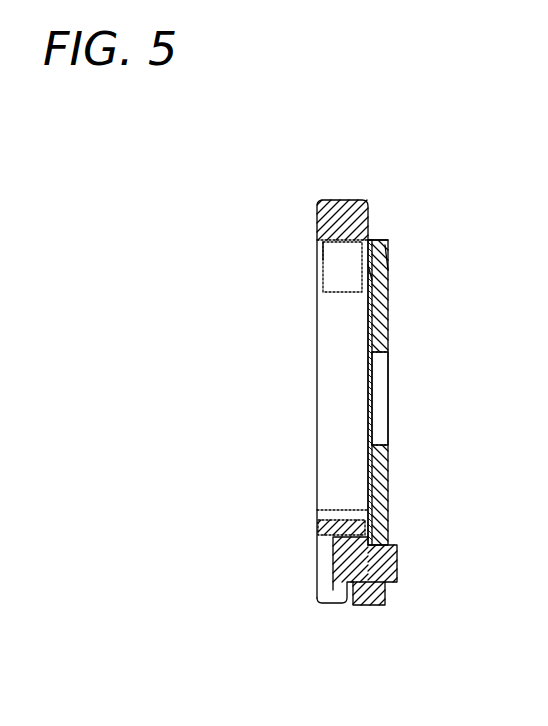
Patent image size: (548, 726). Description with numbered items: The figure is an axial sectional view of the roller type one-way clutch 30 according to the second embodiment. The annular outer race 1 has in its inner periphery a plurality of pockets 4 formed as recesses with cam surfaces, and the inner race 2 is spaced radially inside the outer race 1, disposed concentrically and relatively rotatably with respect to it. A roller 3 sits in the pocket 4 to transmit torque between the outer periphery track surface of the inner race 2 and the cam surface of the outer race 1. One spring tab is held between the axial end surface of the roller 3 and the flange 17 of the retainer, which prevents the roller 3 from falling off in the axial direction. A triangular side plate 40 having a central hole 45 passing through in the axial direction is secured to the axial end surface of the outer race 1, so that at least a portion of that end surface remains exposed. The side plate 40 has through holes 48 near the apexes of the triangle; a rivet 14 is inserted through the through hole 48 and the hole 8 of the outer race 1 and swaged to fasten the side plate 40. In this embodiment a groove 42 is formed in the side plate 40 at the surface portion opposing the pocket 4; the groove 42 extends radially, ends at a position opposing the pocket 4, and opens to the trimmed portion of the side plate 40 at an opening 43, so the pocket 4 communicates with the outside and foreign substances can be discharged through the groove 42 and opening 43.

The outer race 1 is at (322, 200).
The inner race 2 is at (348, 397).
The roller 3 is at (333, 267).
The pocket 4 is at (322, 247).
The hole 8 is at (328, 592).
The rivet 14 is at (380, 563).
The flange 17 is at (368, 272).
The roller type one-way clutch 30 is at (388, 178).
The side plate 40 is at (384, 485).
The groove 42 is at (386, 257).
The opening 43 is at (372, 238).
The central hole 45 is at (383, 390).
The through hole 48 is at (378, 595).